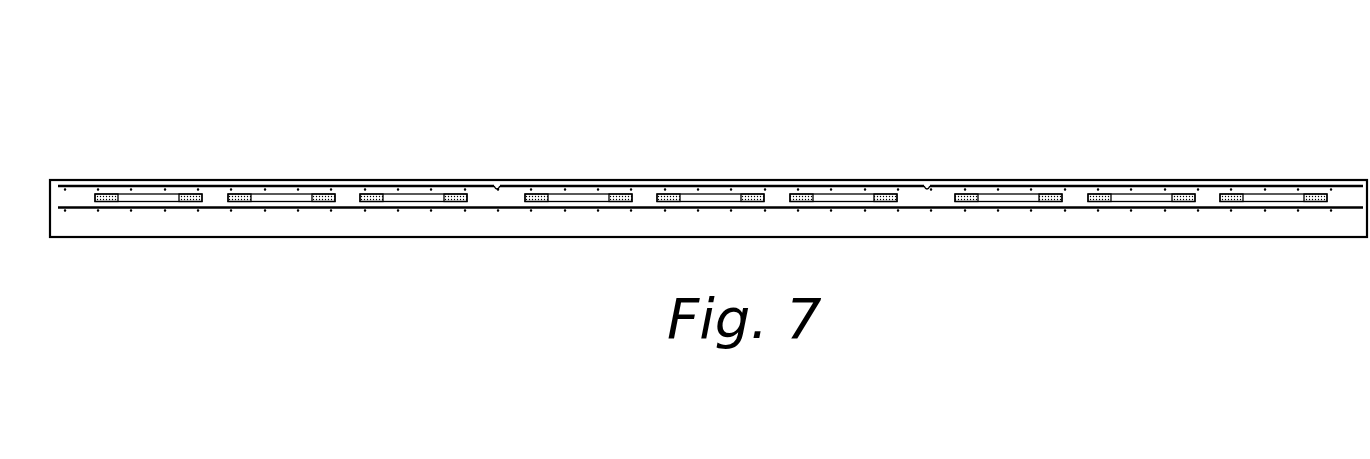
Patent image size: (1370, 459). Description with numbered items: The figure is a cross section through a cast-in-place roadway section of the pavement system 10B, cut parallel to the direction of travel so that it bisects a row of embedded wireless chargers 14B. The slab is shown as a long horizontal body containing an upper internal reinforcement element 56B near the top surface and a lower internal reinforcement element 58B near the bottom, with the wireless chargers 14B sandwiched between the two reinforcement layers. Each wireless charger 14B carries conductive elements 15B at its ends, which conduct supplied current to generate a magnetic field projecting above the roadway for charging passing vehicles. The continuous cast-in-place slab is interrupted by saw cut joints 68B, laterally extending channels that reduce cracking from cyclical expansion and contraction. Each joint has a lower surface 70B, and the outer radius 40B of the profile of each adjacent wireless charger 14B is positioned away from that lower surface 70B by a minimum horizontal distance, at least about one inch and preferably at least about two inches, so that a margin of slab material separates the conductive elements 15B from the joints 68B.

The pavement system 10B is at (748, 106).
The internal reinforcement element 56B is at (75, 187).
The internal reinforcement element 58B is at (76, 208).
The wireless charger 14B is at (212, 188).
The conductive element 15B is at (318, 196).
The outer radius 40B is at (472, 190).
The saw cut joint 68B is at (497, 152).
The lower surface 70B is at (504, 188).